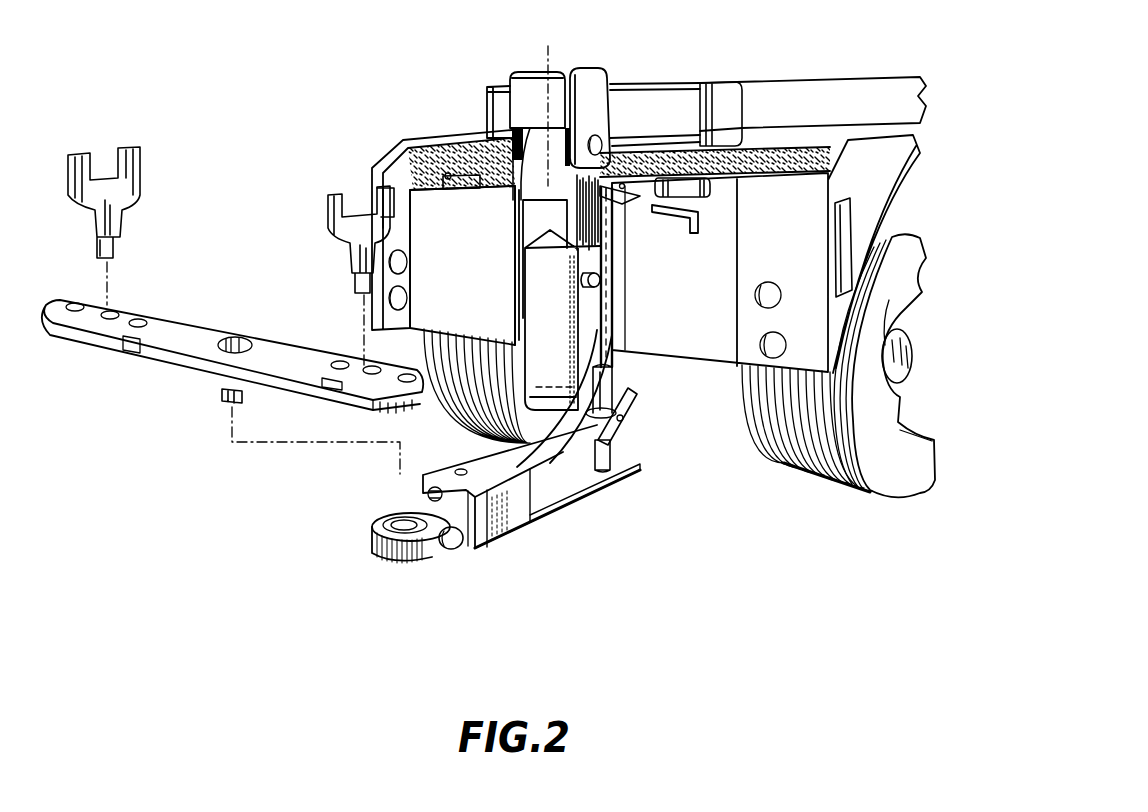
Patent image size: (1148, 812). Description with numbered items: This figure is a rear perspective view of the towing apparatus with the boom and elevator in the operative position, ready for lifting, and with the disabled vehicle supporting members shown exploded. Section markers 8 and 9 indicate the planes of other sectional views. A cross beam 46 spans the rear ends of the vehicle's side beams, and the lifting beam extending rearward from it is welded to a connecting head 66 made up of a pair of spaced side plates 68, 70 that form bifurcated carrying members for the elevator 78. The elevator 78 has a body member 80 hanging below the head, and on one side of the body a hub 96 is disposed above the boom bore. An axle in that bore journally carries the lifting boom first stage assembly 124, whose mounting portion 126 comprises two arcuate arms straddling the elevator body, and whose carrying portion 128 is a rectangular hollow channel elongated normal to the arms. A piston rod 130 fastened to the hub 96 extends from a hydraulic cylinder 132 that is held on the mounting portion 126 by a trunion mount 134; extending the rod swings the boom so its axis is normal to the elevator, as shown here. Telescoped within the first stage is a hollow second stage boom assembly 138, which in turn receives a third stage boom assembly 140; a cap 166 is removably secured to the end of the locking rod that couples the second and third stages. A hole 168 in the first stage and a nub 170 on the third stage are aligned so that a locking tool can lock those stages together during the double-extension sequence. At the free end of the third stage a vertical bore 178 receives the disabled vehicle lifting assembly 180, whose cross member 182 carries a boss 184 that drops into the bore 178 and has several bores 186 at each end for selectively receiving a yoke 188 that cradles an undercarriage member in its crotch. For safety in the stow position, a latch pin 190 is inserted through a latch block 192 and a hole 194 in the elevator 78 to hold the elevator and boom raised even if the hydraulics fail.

The section line 8 is at (580, 48).
The section line 9 is at (340, 542).
The cross beam 46 is at (660, 82).
The connecting head 66 is at (530, 58).
The side plate 68 is at (594, 78).
The side plate 70 is at (510, 82).
The elevator 78 is at (514, 280).
The body member 80 is at (542, 300).
The hub 96 is at (586, 290).
The lifting boom first stage assembly 124 is at (559, 520).
The mounting portion 126 is at (592, 364).
The carrying portion 128 is at (533, 532).
The piston rod 130 is at (610, 312).
The hydraulic cylinder 132 is at (606, 462).
The trunion mount 134 is at (630, 436).
The second stage boom assembly 138 is at (469, 525).
The third stage boom assembly 140 is at (412, 565).
The cap 166 is at (448, 550).
The hole 168 is at (458, 470).
The nub 170 is at (432, 500).
The bore 178 is at (390, 518).
The disabled vehicle lifting assembly 180 is at (232, 353).
The cross member 182 is at (167, 370).
The boss 184 is at (229, 398).
The bores 186 is at (112, 306).
The yoke 188 is at (84, 166).
The latch pin 190 is at (676, 228).
The latch block 192 is at (618, 201).
The hole 194 is at (586, 220).